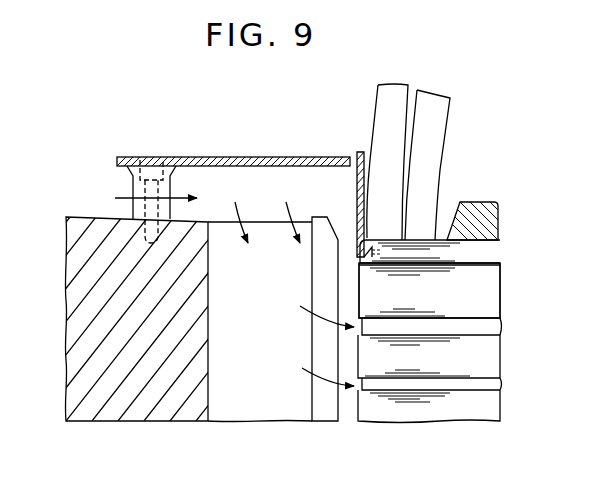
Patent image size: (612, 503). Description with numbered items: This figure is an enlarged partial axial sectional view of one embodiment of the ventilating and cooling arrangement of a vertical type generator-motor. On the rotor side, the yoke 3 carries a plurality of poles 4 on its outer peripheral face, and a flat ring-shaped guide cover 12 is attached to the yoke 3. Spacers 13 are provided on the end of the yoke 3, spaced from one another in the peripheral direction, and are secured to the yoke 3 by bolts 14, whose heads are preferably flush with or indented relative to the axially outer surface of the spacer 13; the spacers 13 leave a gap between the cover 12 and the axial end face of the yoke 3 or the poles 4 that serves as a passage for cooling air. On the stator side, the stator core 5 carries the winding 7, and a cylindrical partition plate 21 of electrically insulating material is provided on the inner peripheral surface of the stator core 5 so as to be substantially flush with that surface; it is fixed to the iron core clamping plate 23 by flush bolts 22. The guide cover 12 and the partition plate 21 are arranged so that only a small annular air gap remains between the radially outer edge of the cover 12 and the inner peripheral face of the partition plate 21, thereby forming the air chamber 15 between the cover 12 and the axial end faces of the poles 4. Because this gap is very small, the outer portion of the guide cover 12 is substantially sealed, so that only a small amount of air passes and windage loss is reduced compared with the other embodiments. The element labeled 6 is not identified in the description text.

The yoke 3 is at (145, 421).
The poles 4 is at (321, 420).
The stator core 5 is at (400, 412).
The stacked panel 6 is at (470, 388).
The winding 7 is at (447, 130).
The guide cover 12 is at (276, 157).
The spacers 13 is at (132, 187).
The bolts 14 is at (150, 158).
The air chamber 15 is at (234, 175).
The partition plate 21 is at (357, 160).
The flush bolts 22 is at (356, 248).
The iron core clamping plate 23 is at (438, 237).